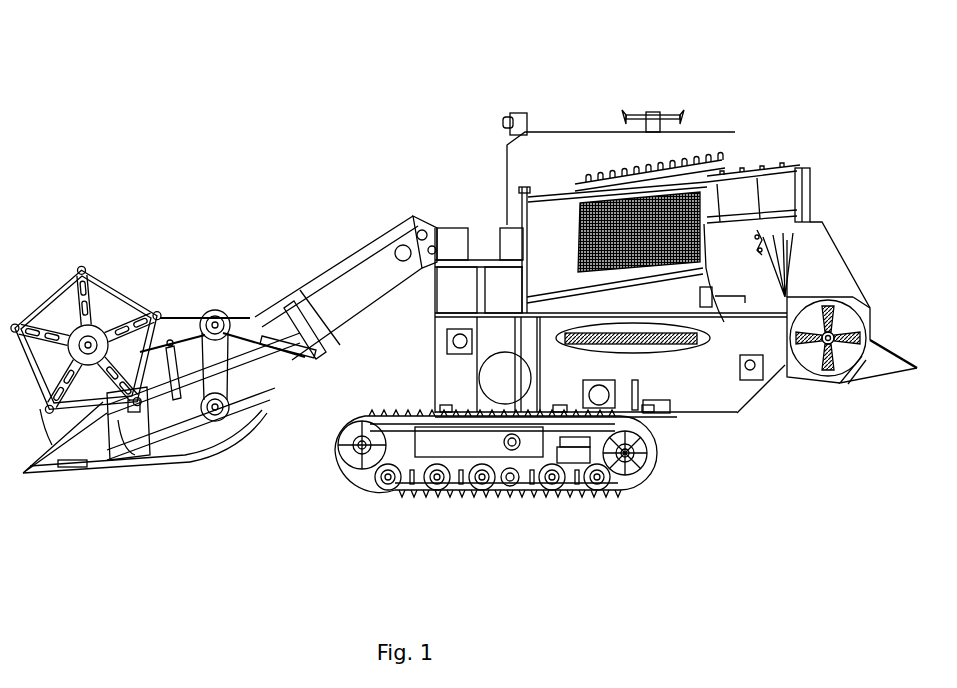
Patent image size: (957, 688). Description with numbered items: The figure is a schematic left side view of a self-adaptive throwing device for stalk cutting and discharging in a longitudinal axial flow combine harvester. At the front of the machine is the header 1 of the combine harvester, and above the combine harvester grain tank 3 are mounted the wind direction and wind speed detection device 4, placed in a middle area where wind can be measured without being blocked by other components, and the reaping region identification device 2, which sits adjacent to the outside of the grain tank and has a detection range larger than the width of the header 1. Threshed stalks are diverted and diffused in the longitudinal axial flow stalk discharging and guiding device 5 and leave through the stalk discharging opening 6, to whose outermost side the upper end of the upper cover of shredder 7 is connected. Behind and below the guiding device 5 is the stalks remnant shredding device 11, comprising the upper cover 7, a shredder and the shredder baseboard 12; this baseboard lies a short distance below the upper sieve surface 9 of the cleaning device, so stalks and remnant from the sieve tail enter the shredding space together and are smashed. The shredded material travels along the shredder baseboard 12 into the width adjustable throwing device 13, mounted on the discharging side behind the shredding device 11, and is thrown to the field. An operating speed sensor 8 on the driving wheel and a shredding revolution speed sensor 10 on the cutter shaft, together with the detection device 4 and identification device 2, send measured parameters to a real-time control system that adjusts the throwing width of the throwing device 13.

The header of the combine harvester 1 is at (137, 290).
The reaping region identification device 2 is at (505, 125).
The combine harvester grain tank 3 is at (563, 130).
The wind direction and wind speed detection device 4 is at (651, 130).
The longitudinal axial flow stalk discharging and guiding device 5 is at (713, 168).
The stalk discharging opening 6 is at (808, 162).
The upper cover of shredder 7 is at (838, 247).
The operating speed sensor 8 is at (355, 477).
The upper sieve surface of the cleaning device 9 is at (560, 478).
The shredding revolution speed sensor 10 is at (822, 344).
The stalks remnant shredding device 11 is at (829, 346).
The shredder baseboard 12 is at (848, 358).
The width adjustable throwing device 13 is at (878, 355).